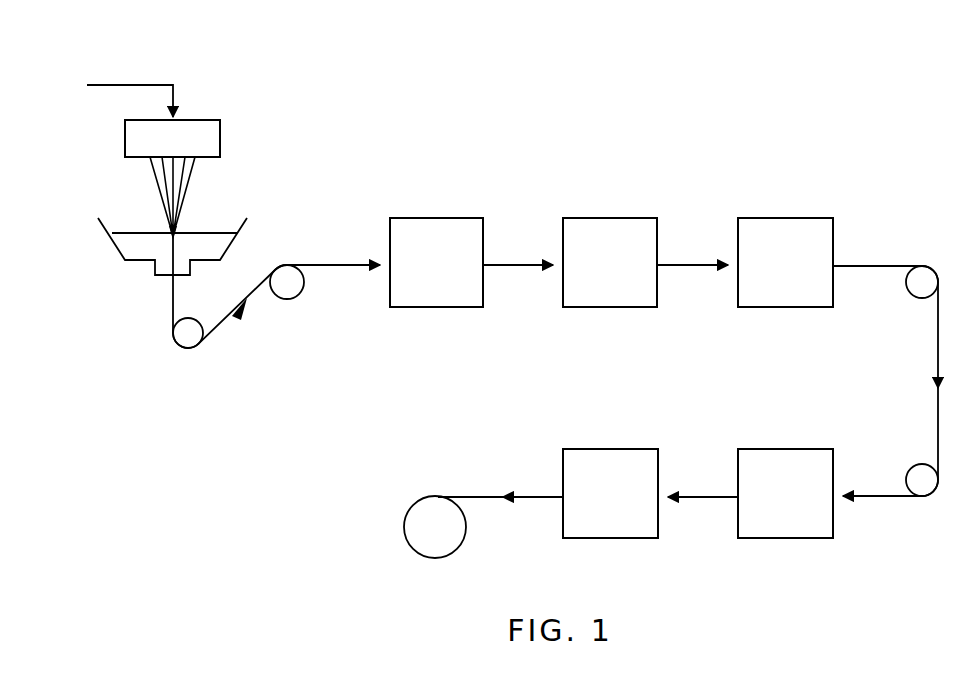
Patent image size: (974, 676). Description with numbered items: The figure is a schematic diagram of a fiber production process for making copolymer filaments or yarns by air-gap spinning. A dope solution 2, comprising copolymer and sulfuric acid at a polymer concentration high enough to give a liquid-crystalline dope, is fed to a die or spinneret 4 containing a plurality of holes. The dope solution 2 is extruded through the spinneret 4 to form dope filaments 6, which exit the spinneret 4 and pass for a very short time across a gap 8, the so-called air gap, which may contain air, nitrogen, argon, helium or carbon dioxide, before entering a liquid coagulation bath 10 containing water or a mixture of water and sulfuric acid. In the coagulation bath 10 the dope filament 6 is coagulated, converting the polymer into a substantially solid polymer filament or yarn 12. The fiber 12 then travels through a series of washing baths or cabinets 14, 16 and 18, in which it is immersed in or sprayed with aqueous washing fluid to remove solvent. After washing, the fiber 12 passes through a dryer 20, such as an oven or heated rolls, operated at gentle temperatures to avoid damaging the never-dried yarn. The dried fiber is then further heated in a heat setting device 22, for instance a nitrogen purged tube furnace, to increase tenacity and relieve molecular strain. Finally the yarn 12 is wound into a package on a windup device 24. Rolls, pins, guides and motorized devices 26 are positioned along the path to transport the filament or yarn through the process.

The dope solution 2 is at (132, 84).
The spinneret 4 is at (166, 149).
The dope filament 6 is at (158, 192).
The air gap 8 is at (211, 196).
The coagulation bath 10 is at (217, 216).
The fiber or yarn 12 is at (229, 322).
The washing bath or cabinet 14 is at (427, 276).
The washing bath or cabinet 16 is at (601, 276).
The washing bath or cabinet 18 is at (777, 276).
The dryer 20 is at (777, 508).
The heat setting device 22 is at (602, 508).
The windup device 24 is at (426, 538).
The rolls, pins, guides, and/or motorized devices 26 is at (196, 319).